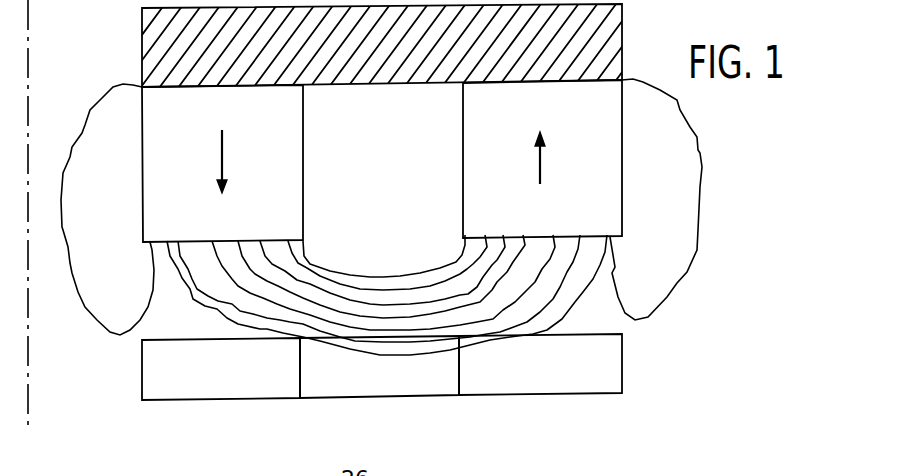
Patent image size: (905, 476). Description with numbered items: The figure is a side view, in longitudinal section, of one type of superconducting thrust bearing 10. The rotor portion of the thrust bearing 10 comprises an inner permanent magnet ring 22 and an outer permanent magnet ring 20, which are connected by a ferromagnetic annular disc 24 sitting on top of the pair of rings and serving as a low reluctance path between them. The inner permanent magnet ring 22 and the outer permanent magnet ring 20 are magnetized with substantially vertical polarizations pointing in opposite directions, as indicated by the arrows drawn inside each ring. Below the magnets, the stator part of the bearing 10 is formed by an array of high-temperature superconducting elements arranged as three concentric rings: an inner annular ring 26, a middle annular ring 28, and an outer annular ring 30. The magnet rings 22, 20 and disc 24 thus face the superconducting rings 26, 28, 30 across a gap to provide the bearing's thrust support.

The thrust bearing 10 is at (210, 414).
The outer permanent magnet ring 20 is at (586, 132).
The inner permanent magnet ring 22 is at (175, 146).
The ferromagnetic annular disc 24 is at (623, 27).
The inner annular ring 26 is at (142, 368).
The middle annular ring 28 is at (385, 398).
The outer annular ring 30 is at (623, 362).